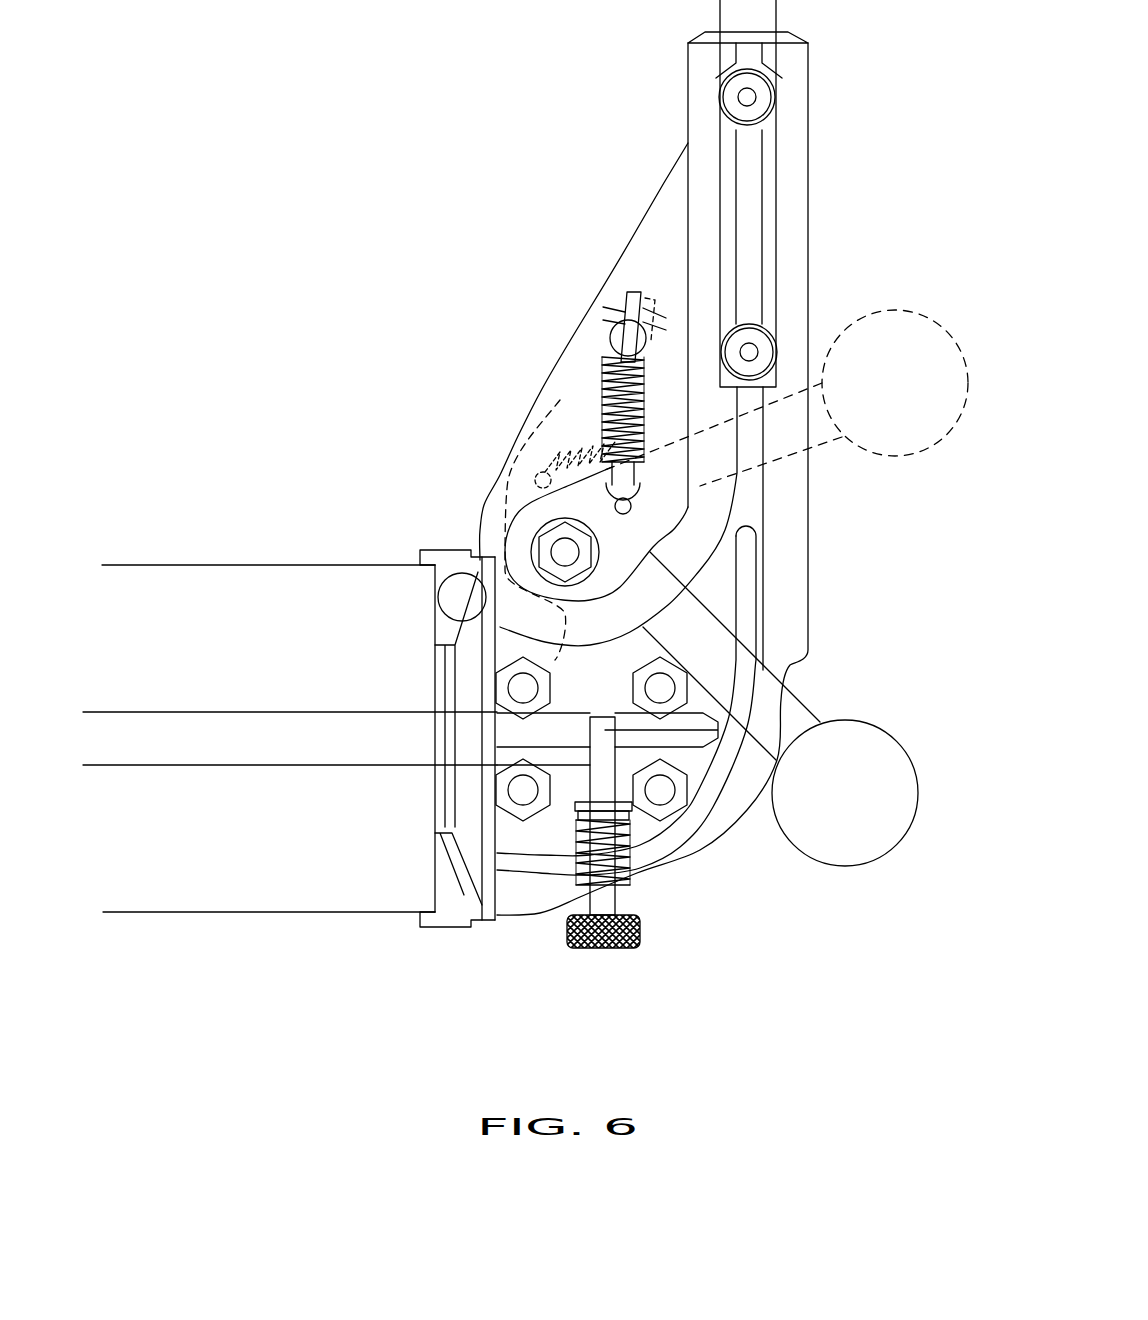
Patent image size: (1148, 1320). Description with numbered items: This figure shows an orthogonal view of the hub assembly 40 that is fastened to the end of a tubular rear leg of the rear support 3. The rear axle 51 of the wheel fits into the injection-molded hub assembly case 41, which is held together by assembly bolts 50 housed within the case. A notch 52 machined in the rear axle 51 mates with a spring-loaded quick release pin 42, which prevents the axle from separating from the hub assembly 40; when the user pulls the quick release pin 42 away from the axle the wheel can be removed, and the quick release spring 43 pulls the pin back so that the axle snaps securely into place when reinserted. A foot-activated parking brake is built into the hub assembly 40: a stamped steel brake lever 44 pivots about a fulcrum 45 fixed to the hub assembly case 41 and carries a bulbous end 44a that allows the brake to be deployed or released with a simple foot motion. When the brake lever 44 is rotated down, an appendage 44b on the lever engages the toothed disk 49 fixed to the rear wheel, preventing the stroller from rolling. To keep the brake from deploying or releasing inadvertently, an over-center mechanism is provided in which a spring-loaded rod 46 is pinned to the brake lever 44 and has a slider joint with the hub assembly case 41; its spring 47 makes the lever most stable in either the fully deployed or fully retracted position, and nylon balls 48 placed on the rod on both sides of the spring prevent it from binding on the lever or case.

The rear support 3 is at (778, 10).
The hub assembly 40 is at (865, 196).
The hub assembly case 41 is at (812, 553).
The quick release pin 42 is at (645, 937).
The quick release spring 43 is at (640, 868).
The brake lever 44 is at (768, 693).
The bulbous end 44a is at (862, 833).
The appendage 44b is at (455, 578).
The brake lever fulcrum 45 is at (563, 550).
The over-center mechanism rod 46 is at (636, 288).
The over-center mechanism spring 47 is at (596, 373).
The nylon balls 48 is at (608, 333).
The toothed disk 49 is at (455, 917).
The assembly bolts 50 is at (668, 798).
The rear axle 51 is at (235, 733).
The notch 52 is at (603, 713).